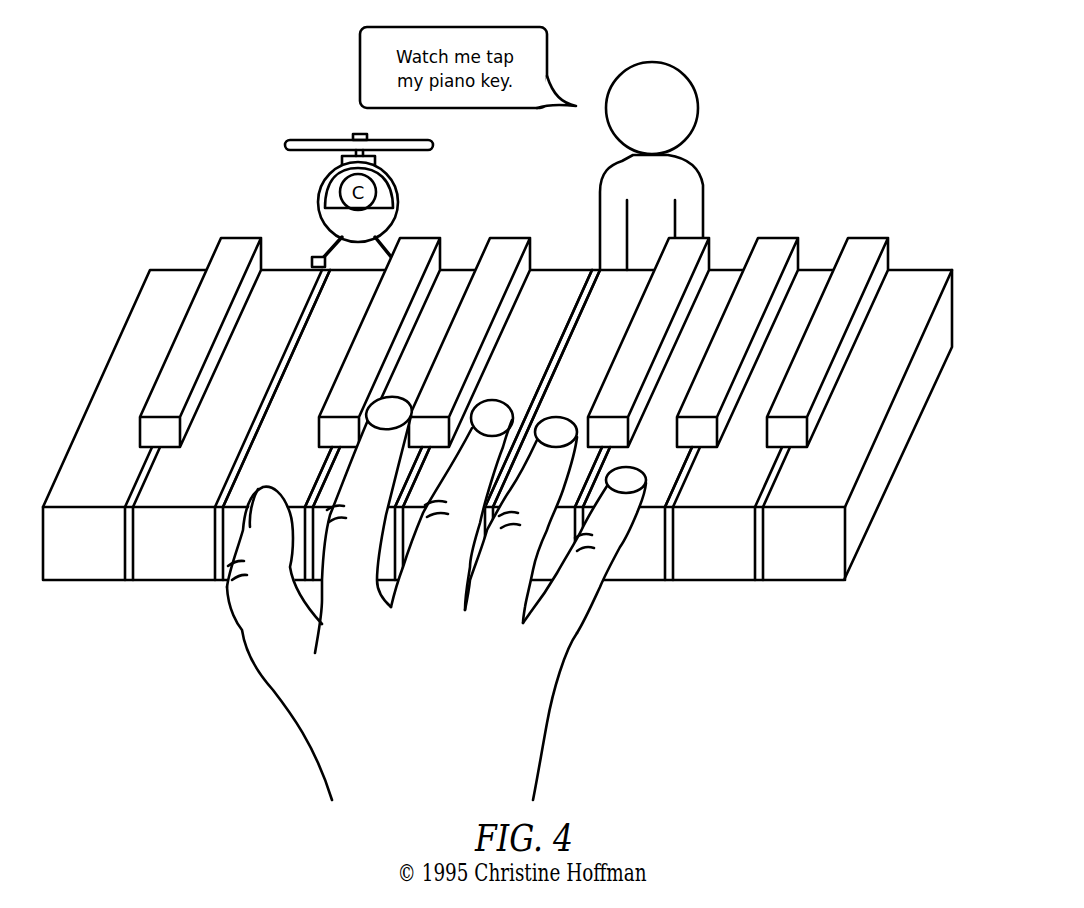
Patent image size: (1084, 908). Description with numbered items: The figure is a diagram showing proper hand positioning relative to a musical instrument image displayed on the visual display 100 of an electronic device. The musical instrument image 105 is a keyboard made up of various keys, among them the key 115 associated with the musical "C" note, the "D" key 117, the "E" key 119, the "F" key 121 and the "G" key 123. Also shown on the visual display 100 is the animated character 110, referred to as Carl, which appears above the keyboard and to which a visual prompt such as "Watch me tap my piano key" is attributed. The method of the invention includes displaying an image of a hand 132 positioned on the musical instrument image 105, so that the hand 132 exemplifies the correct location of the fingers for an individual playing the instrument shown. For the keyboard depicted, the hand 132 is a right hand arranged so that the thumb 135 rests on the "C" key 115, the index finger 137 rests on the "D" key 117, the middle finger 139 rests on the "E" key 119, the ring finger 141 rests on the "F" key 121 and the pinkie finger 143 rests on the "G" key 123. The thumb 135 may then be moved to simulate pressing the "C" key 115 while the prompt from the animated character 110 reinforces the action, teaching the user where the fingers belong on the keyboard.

The visual display 100 is at (840, 113).
The musical instrument image 105 is at (889, 517).
The animated character 110 is at (697, 100).
The key 115 is at (332, 308).
The "D" key 117 is at (429, 308).
The "E" key 119 is at (529, 315).
The "F" key 121 is at (597, 314).
The "G" key 123 is at (694, 317).
The hand 132 is at (558, 682).
The thumb 135 is at (250, 550).
The index finger 137 is at (354, 478).
The middle finger 139 is at (457, 475).
The ring finger 141 is at (526, 485).
The pinkie finger 143 is at (596, 533).